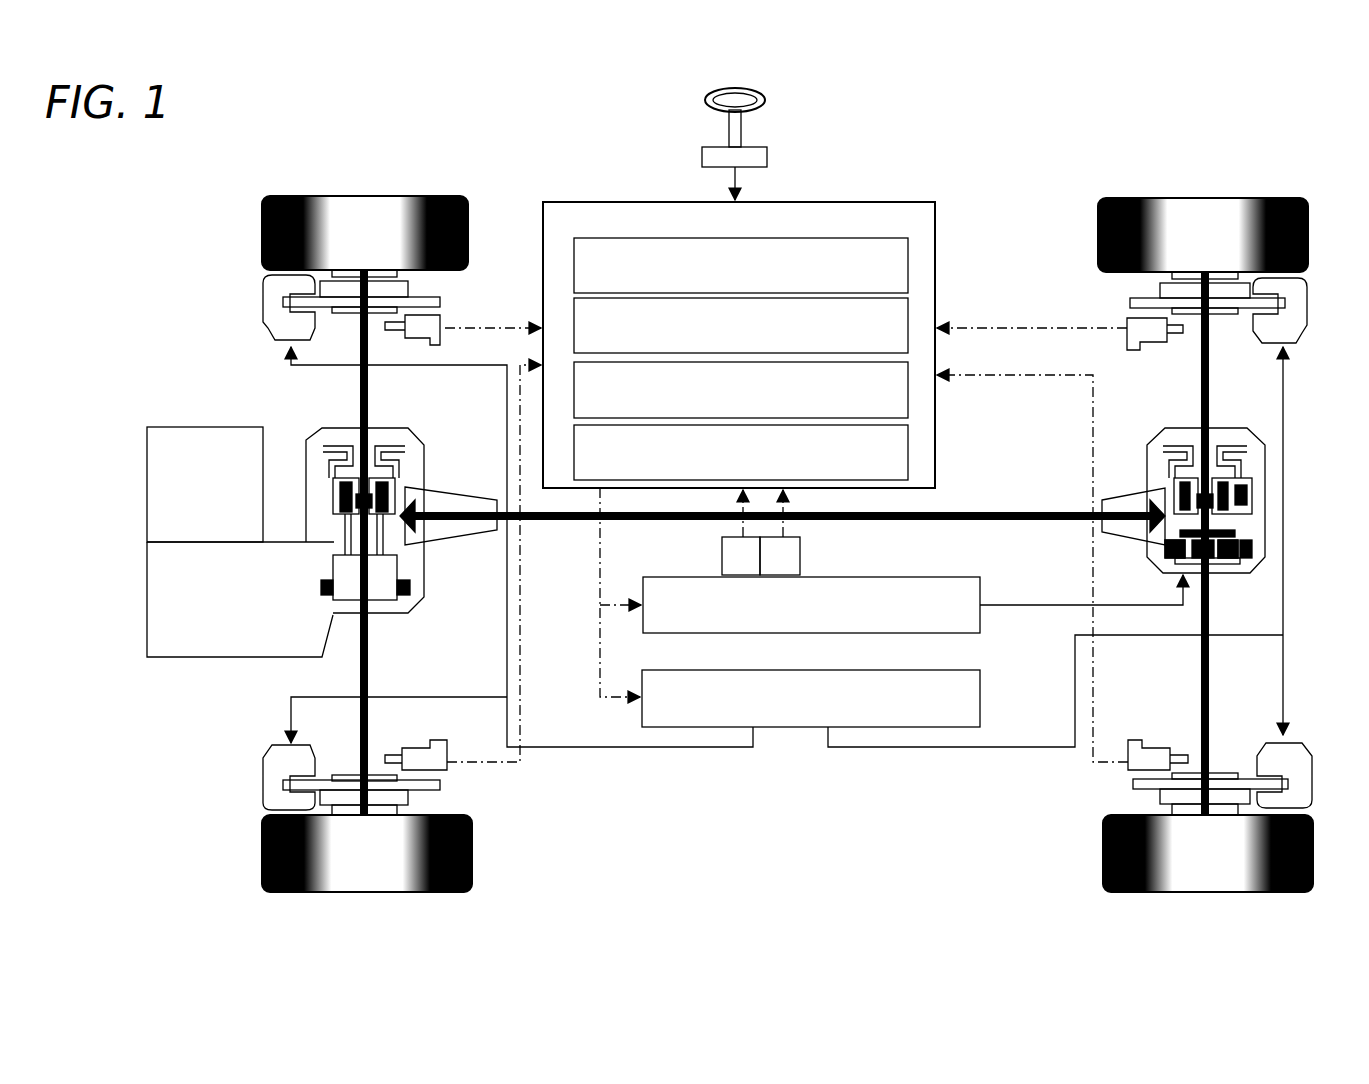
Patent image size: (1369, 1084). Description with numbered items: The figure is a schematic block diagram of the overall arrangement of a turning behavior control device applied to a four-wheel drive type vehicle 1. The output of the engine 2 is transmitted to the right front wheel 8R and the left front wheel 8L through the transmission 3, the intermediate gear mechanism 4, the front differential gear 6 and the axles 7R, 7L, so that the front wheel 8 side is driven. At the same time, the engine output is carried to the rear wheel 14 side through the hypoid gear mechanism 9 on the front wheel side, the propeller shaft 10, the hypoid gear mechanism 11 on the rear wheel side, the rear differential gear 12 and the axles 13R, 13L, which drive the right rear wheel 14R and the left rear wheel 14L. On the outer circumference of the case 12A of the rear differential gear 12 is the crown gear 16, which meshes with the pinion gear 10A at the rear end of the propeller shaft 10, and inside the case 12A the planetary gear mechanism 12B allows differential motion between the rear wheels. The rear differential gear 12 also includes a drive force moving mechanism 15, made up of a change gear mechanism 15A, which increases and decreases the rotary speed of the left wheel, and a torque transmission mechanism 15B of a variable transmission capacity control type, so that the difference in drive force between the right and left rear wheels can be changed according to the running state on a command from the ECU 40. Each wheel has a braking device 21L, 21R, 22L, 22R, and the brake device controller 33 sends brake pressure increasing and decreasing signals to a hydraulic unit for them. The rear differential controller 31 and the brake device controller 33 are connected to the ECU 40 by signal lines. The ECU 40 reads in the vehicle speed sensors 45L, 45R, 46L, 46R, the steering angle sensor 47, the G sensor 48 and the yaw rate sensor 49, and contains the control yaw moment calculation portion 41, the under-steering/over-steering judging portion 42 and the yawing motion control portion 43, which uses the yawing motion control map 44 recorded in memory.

The vehicle 1 is at (700, 834).
The engine 2 is at (200, 427).
The transmission 3 is at (243, 657).
The intermediate gear mechanism 4 is at (328, 598).
The front differential gear 6 is at (328, 476).
The axle 7R is at (370, 398).
The axle 7L is at (371, 652).
The front wheel 8 is at (365, 895).
The right front wheel 8R is at (262, 236).
The left front wheel 8L is at (262, 857).
The hypoid gear mechanism 9 is at (417, 490).
The propeller shaft 10 is at (585, 522).
The pinion gear 10A is at (1145, 500).
The hypoid gear mechanism 11 is at (1150, 553).
The rear differential gear 12 is at (1262, 562).
The case 12A is at (1238, 575).
The planetary gear mechanism 12B is at (1170, 565).
The axle 13R is at (1195, 408).
The axle 13L is at (1214, 690).
The rear wheel 14 is at (1209, 895).
The right rear wheel 14R is at (1285, 198).
The left rear wheel 14L is at (1313, 860).
The drive force moving mechanism 15 is at (1236, 418).
The change gear mechanism 15A is at (1262, 505).
The torque transmission mechanism 15B is at (1262, 452).
The crown gear 16 is at (1268, 533).
The braking device 21R is at (263, 312).
The braking device 21L is at (263, 773).
The braking device 22R is at (1305, 300).
The braking device 22L is at (1305, 752).
The rear differential controller 31 is at (970, 580).
The brake device controller 33 is at (975, 678).
The ECU 40 is at (893, 200).
The control yaw moment calculation portion 41 is at (908, 263).
The under-steering/over-steering judging portion 42 is at (908, 312).
The yawing motion control portion 43 is at (908, 398).
The yawing motion control map 44 is at (908, 455).
The vehicle speed sensor 45R is at (442, 326).
The vehicle speed sensor 45L is at (442, 748).
The vehicle speed sensor 46R is at (1145, 338).
The vehicle speed sensor 46L is at (1150, 746).
The steering angle sensor 47 is at (767, 155).
The G sensor 48 is at (730, 551).
The yaw rate sensor 49 is at (790, 558).